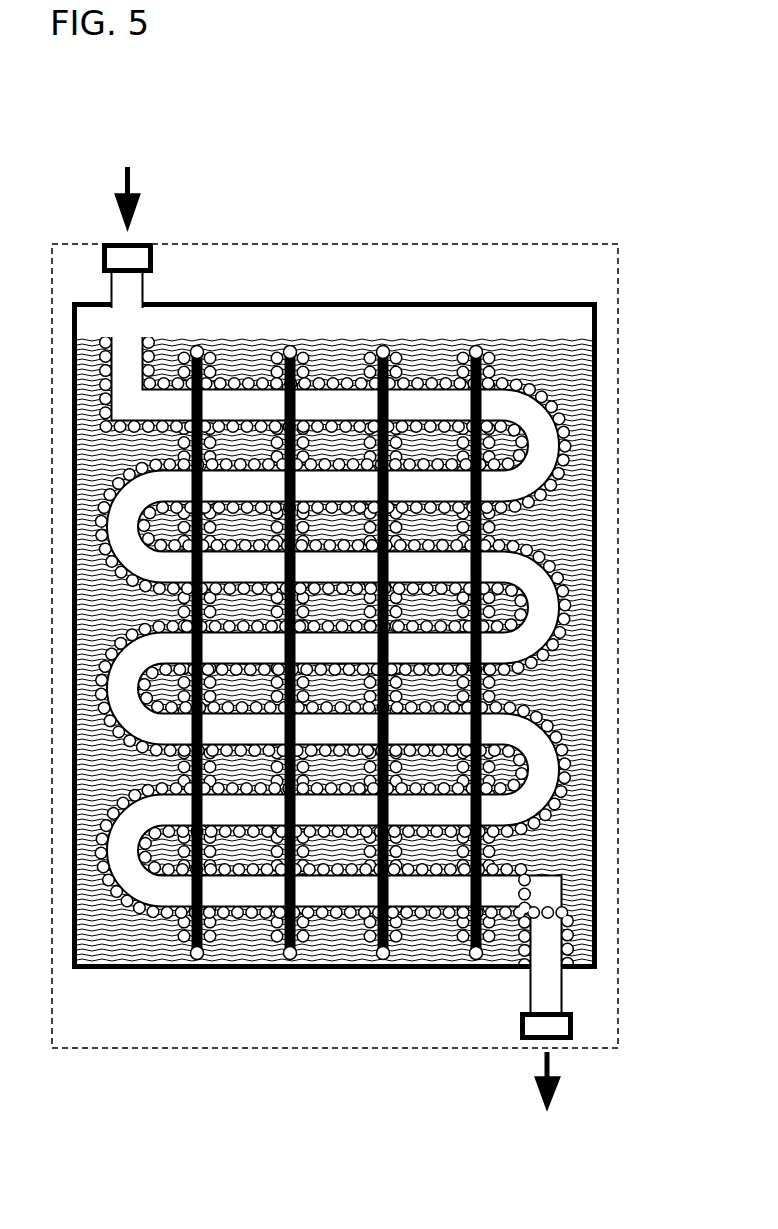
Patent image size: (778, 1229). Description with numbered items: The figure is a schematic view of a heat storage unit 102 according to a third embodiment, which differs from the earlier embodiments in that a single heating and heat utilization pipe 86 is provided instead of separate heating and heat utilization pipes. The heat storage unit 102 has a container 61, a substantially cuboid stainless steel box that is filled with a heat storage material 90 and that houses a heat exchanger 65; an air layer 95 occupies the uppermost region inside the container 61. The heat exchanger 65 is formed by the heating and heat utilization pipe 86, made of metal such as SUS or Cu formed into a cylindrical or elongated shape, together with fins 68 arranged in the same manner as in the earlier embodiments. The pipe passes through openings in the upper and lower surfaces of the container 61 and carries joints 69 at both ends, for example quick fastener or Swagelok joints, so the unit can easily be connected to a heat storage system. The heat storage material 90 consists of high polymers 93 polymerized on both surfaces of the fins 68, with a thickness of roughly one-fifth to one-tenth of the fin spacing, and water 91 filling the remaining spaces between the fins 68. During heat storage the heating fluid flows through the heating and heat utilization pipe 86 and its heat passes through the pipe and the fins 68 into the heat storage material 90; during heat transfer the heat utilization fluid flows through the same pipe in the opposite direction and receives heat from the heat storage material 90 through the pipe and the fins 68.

The heat storage unit 102 is at (569, 212).
The joint 69 is at (102, 258).
The air layer 95 is at (580, 325).
The high polymers 93 is at (586, 415).
The water 91 is at (596, 476).
The heat storage material 90 is at (392, 642).
The container 61 is at (596, 547).
The heat exchanger 65 is at (232, 219).
The heating and heat utilization pipe 86 is at (150, 322).
The fins 68 is at (381, 350).